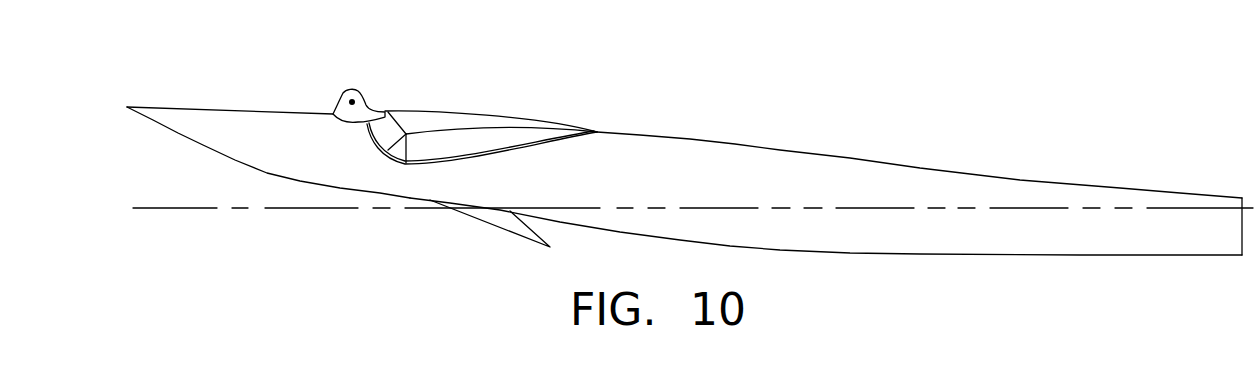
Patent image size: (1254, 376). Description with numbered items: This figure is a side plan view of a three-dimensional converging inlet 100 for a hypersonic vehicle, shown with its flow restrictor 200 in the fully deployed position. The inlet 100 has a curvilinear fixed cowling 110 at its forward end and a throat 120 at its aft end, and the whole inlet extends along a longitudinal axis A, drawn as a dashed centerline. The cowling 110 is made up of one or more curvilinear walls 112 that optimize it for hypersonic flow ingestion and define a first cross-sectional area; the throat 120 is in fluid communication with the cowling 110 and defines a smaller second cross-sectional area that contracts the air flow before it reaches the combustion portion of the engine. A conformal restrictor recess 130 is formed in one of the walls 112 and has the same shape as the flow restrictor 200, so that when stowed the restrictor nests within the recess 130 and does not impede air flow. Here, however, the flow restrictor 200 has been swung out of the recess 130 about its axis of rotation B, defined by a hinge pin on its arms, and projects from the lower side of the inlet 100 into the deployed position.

The converging inlet 100 is at (550, 59).
The cowling 110 is at (166, 90).
The wall 112 is at (208, 135).
The throat 120 is at (1222, 197).
The conformal restrictor recess 130 is at (449, 97).
The flow restrictor 200 is at (518, 225).
The longitudinal axis A is at (218, 208).
The axis of rotation B is at (349, 97).